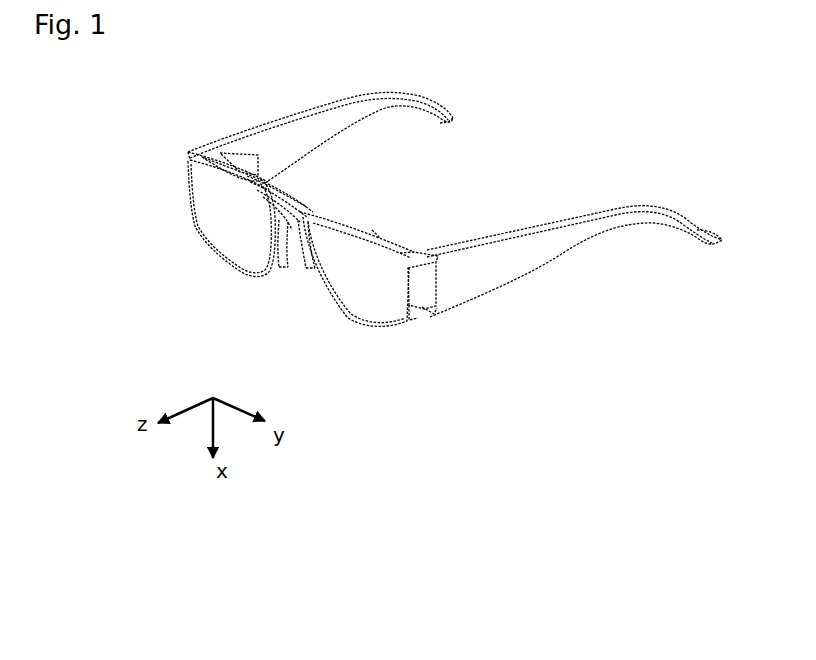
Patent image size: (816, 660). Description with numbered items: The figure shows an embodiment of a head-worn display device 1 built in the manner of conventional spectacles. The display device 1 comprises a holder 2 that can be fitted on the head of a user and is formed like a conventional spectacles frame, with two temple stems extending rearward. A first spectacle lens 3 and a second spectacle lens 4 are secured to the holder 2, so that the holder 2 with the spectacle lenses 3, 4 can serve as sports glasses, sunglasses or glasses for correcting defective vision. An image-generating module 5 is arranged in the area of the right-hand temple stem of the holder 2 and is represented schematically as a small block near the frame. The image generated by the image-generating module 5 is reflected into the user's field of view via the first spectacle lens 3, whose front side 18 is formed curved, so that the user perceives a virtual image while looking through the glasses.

The display device 1 is at (255, 322).
The holder 2 is at (347, 98).
The first spectacle lens 3 is at (234, 273).
The second spectacle lens 4 is at (345, 319).
The image-generating module 5 is at (240, 156).
The front side 18 is at (217, 236).